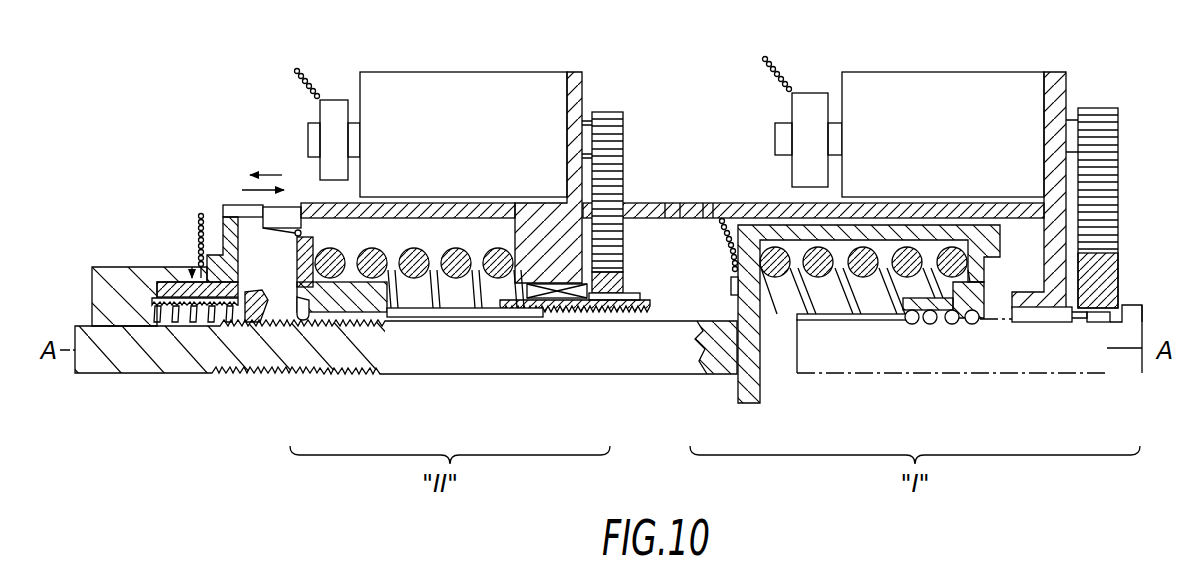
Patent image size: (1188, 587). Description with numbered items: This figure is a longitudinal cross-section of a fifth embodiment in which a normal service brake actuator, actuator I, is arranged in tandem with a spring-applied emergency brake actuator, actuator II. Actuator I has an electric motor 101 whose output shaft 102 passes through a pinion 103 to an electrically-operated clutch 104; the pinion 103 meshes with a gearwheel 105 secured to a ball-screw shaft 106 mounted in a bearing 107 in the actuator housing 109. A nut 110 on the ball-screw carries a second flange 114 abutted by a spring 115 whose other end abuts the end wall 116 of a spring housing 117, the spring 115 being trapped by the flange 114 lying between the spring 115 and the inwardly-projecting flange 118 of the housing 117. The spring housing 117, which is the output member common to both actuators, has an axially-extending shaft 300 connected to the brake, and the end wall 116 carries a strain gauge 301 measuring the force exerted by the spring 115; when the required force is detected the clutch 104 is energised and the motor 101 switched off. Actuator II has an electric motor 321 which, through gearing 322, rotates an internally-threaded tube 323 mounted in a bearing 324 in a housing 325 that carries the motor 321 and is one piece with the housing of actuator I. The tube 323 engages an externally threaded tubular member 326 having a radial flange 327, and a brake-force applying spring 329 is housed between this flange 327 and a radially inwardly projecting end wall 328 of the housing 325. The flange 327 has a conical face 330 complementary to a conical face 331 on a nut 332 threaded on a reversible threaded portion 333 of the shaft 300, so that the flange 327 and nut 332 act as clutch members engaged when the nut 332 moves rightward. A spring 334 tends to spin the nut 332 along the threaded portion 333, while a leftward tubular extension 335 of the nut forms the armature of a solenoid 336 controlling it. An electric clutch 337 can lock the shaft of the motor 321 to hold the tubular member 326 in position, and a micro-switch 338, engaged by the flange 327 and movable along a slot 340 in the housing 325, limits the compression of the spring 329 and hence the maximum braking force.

The electric motor 101 is at (920, 123).
The output shaft 102 is at (355, 405).
The pinion 103 is at (1098, 120).
The electrically-operated clutch 104 is at (803, 100).
The gearwheel 105 is at (1092, 210).
The ball-screw shaft 106 is at (970, 345).
The bearing 107 is at (1030, 322).
The actuator housing 109 is at (1021, 297).
The nut 110 is at (912, 321).
The second flange 114 is at (975, 245).
The spring 115 is at (908, 250).
The end wall 116 is at (745, 301).
The spring housing 117 is at (775, 228).
The inwardly-projecting flange 118 is at (993, 255).
The shaft 300 is at (668, 340).
The strain gauge 301 is at (733, 280).
The electric motor 321 is at (460, 100).
The gearing 322 is at (612, 178).
The internally-threaded tube 323 is at (606, 313).
The bearing 324 is at (546, 300).
The housing 325 is at (543, 240).
The externally threaded tubular member 326 is at (445, 318).
The radial flange 327 is at (298, 264).
The end wall 328 is at (522, 230).
The brake-force applying spring 329 is at (381, 250).
The conical face 330 is at (298, 372).
The complementary conical face 331 is at (335, 292).
The nut 332 is at (254, 320).
The threaded portion 333 is at (298, 322).
The spring 334 is at (176, 300).
The tubular extension 335 is at (155, 318).
The solenoid 336 is at (189, 280).
The electric clutch 337 is at (330, 108).
The micro-switch 338 is at (298, 200).
The slot 340 is at (230, 205).